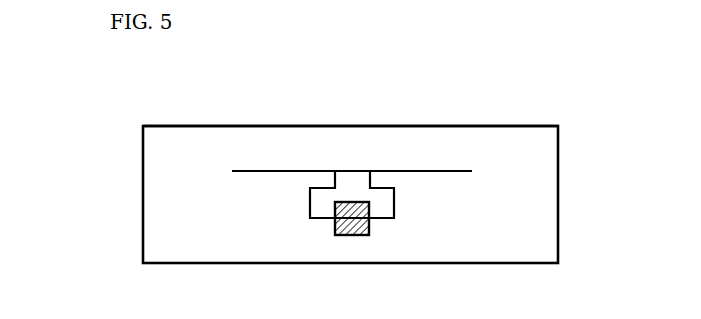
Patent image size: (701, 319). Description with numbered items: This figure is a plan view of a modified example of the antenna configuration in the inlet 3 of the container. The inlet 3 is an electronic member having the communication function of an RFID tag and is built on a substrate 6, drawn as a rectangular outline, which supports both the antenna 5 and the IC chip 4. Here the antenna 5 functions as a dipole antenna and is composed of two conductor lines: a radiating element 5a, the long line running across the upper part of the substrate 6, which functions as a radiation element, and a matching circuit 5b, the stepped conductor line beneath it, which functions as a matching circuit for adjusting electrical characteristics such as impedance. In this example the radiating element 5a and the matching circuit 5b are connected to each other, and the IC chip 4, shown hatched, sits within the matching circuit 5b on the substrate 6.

The inlet 3 is at (154, 98).
The IC chip 4 is at (348, 235).
The antenna 5 is at (92, 176).
The radiating element 5a is at (253, 171).
The matching circuit 5b is at (310, 205).
The substrate 6 is at (435, 126).